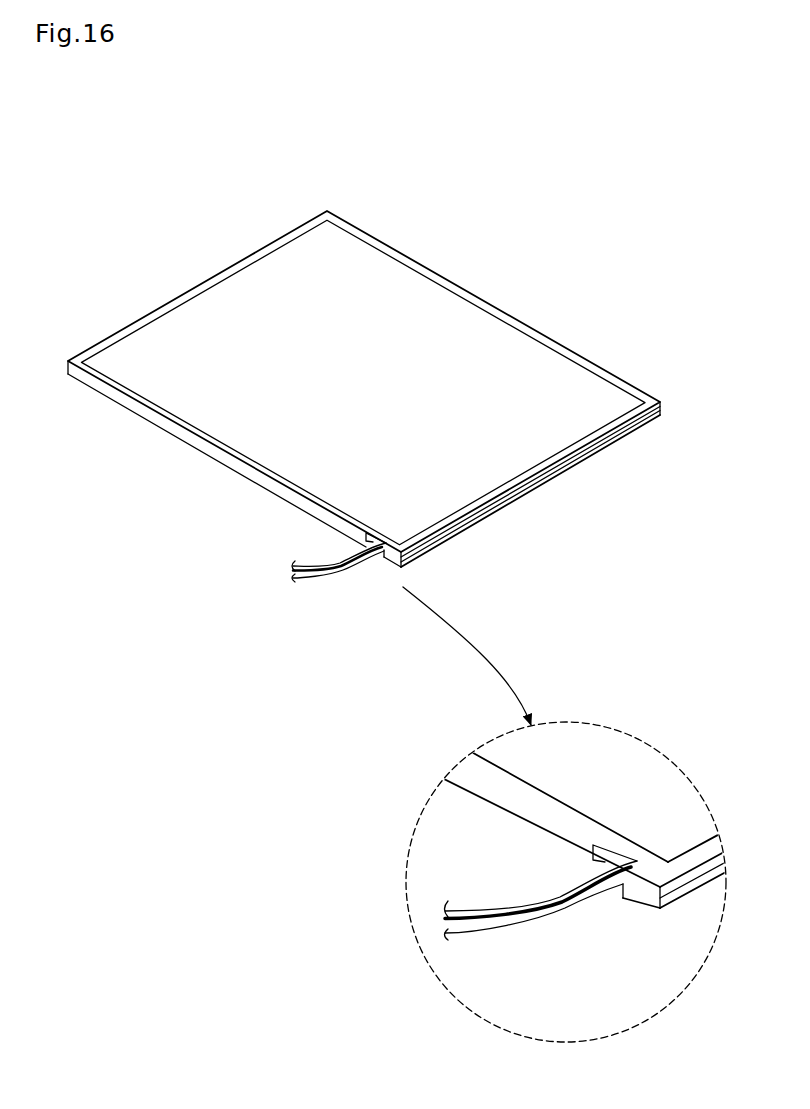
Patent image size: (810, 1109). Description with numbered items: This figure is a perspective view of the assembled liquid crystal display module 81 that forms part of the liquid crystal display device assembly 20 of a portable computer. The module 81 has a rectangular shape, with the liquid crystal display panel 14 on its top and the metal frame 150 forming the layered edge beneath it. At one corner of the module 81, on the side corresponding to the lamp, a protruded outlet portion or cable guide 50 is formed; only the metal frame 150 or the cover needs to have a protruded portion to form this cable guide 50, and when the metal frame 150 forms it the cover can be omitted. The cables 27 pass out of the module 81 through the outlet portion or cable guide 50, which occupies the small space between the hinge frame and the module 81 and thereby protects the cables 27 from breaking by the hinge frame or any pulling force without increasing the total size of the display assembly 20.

The liquid crystal display panel 14 is at (253, 300).
The liquid crystal display device assembly 20 is at (379, 406).
The cables 27 is at (328, 574).
The outlet portion or cable guide 50 is at (380, 548).
The liquid crystal display module 81 is at (615, 440).
The metal frame 150 is at (542, 467).